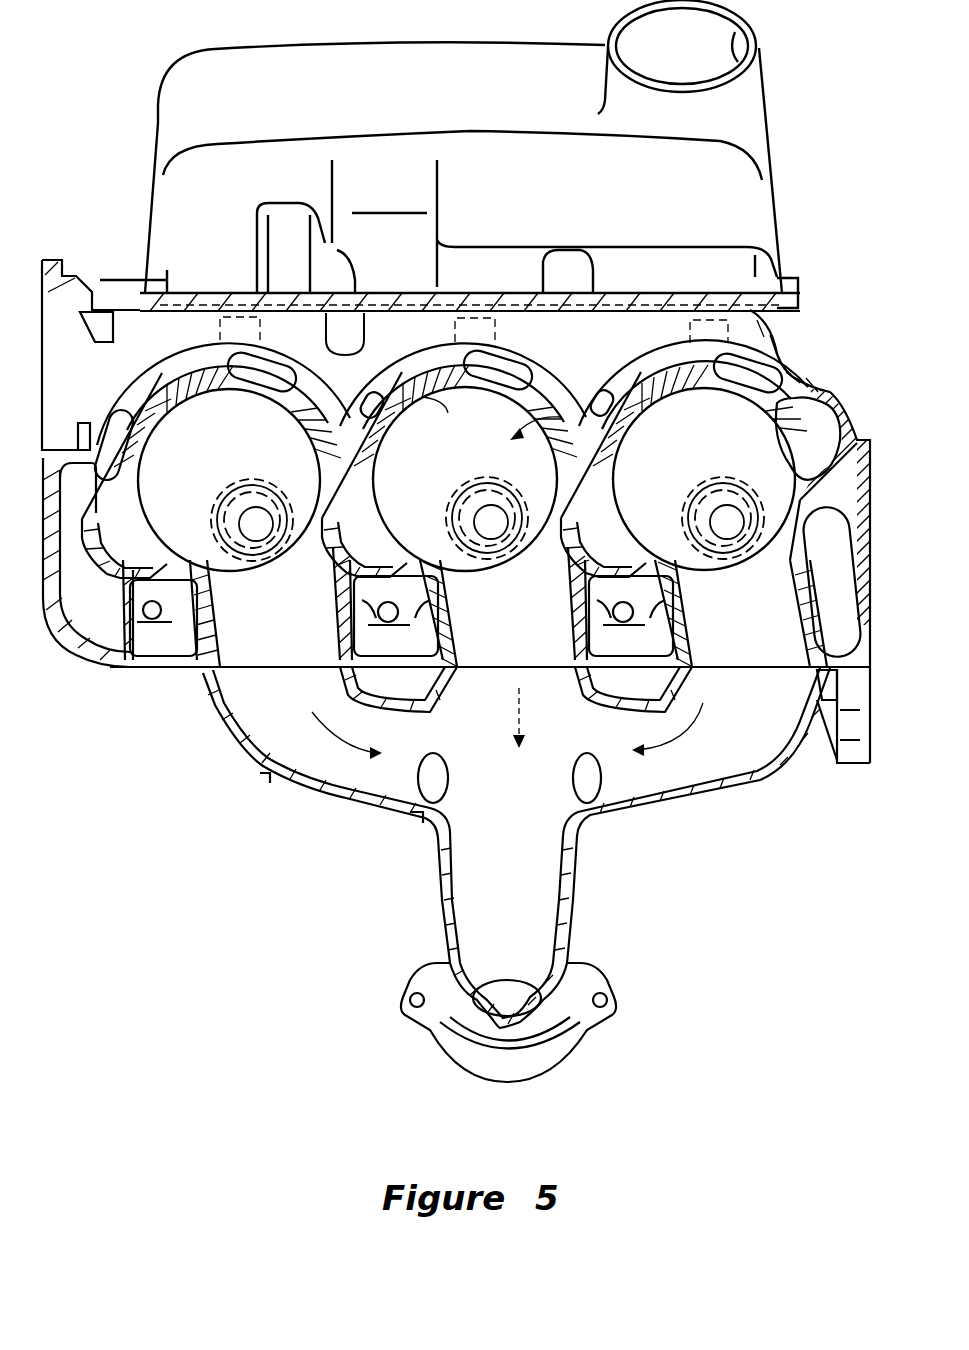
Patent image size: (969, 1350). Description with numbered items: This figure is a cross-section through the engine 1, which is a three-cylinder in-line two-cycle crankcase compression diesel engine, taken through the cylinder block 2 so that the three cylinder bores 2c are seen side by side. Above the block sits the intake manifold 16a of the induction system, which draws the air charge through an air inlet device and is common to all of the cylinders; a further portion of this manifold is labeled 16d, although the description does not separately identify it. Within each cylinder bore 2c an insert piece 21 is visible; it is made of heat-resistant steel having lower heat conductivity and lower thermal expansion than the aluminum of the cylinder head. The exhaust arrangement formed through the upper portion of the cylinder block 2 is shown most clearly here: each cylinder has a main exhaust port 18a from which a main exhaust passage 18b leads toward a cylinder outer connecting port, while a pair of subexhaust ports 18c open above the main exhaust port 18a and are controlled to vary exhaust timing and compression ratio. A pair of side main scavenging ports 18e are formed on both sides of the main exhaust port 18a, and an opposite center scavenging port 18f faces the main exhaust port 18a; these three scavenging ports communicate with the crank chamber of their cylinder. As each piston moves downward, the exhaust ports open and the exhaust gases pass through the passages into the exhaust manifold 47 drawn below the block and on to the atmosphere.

The engine 1 is at (843, 324).
The cylinder block 2 is at (855, 417).
The cylinder bore 2c is at (140, 427).
The intake manifold 16a is at (157, 123).
The breather pipe 16d is at (732, 42).
The main exhaust port 18a is at (237, 573).
The main exhaust passage 18b is at (237, 633).
The subexhaust port 18c is at (797, 467).
The side main scavenging port 18e is at (307, 423).
The opposite center scavenging port 18f is at (203, 390).
The insert piece 21 is at (252, 482).
The exhaust manifold 47 is at (338, 803).